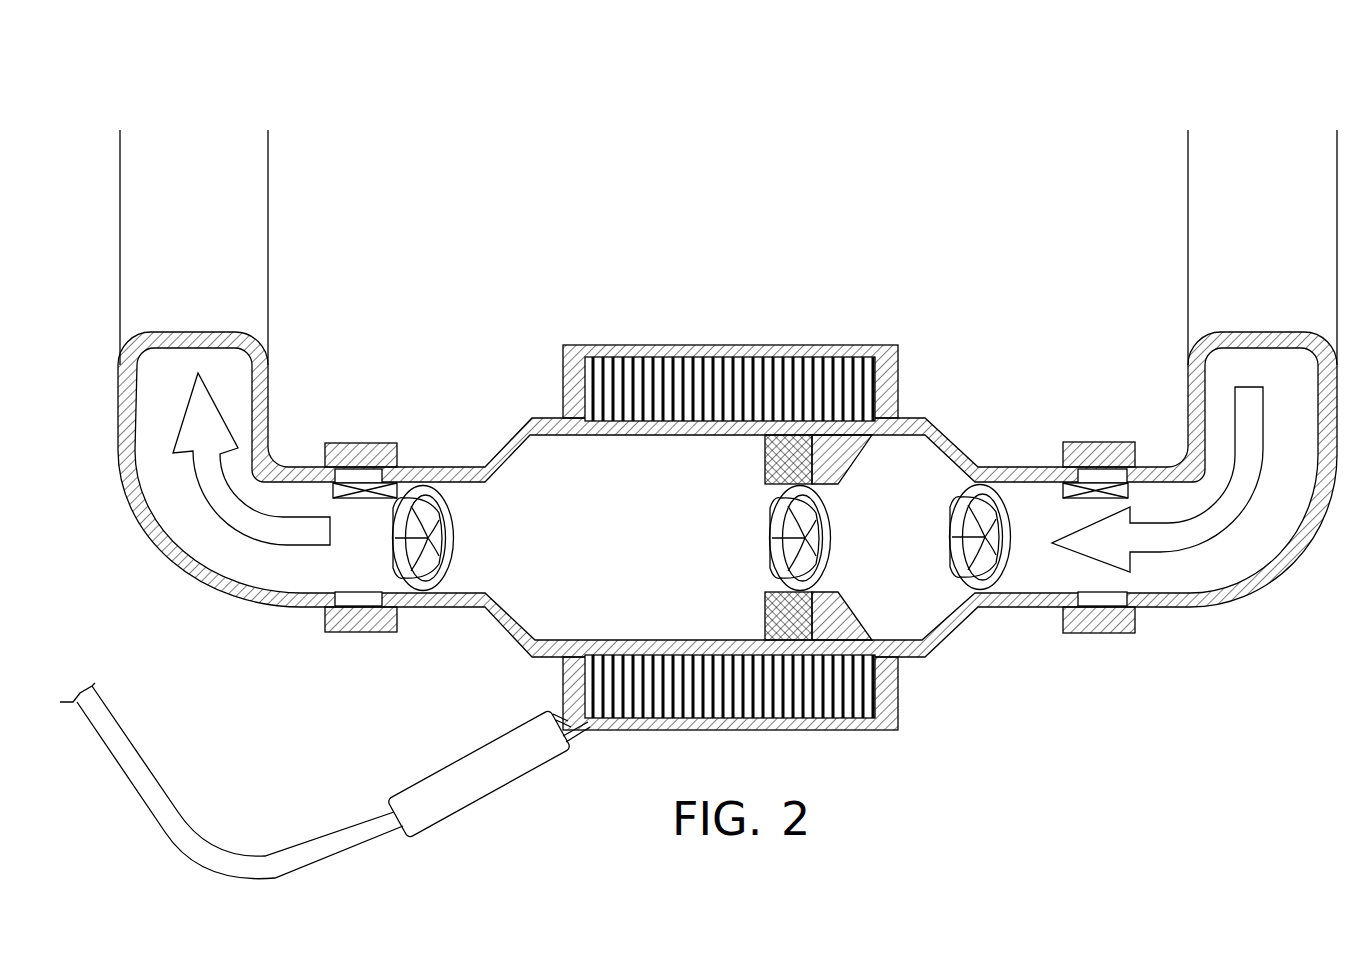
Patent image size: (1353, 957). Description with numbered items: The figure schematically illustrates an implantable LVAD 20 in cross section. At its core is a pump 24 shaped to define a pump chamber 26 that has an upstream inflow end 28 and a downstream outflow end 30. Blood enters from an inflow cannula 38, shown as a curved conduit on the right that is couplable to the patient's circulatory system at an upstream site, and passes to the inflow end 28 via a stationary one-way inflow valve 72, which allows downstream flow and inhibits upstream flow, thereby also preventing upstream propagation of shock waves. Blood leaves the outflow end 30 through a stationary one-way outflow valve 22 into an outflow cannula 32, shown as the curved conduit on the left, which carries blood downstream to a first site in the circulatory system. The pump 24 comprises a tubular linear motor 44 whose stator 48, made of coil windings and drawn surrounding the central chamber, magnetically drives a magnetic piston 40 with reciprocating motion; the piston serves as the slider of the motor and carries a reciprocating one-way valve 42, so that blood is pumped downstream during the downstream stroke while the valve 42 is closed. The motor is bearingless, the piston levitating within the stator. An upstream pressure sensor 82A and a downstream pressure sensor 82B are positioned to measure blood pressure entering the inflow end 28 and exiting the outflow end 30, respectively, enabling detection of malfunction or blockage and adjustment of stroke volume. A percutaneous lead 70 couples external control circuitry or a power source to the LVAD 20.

The implantable LVAD 20 is at (402, 112).
The stationary one-way outflow valve 22 is at (433, 489).
The pump 24 is at (784, 487).
The pump chamber 26 is at (672, 535).
The upstream inflow end 28 is at (1110, 568).
The downstream outflow end 30 is at (340, 566).
The outflow cannula 32 is at (255, 268).
The inflow cannula 38 is at (1282, 556).
The magnetic piston 40 is at (766, 537).
The reciprocating one-way valve 42 is at (780, 555).
The tubular linear motor 44 is at (784, 506).
The stator 48 is at (688, 383).
The percutaneous lead 70 is at (471, 790).
The stationary one-way inflow valve 72 is at (986, 487).
The upstream pressure sensor 82A is at (1128, 490).
The downstream pressure sensor 82B is at (333, 490).